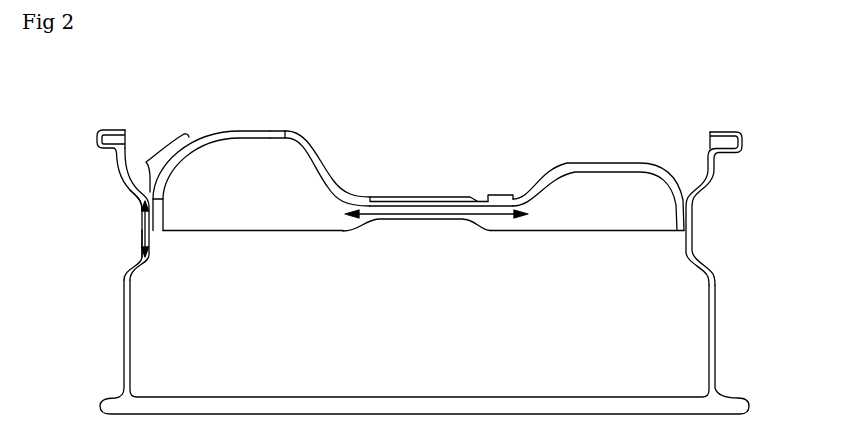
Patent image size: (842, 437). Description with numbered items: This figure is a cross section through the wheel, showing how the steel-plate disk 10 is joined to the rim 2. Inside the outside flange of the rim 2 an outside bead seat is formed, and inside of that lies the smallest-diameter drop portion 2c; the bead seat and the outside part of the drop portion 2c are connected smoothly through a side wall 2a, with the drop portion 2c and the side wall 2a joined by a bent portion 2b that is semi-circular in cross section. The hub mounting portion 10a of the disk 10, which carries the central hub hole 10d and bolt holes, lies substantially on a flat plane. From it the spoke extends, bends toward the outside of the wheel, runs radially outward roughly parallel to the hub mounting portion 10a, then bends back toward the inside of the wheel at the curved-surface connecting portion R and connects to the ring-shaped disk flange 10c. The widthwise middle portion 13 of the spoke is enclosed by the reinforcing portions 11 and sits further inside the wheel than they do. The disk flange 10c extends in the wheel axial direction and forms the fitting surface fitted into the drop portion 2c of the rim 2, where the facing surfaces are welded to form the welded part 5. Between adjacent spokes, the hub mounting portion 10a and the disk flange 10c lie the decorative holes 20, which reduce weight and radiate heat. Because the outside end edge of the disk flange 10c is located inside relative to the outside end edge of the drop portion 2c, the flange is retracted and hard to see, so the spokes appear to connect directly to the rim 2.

The rim 2 is at (78, 130).
The side wall 2a is at (132, 198).
The bent portion 2b is at (138, 205).
The drop portion 2c is at (140, 230).
The welded part 5 is at (692, 187).
The disk 10 is at (412, 170).
The hub mounting portion 10a is at (422, 220).
The disk flange 10c is at (168, 198).
The hub hole 10d is at (428, 197).
The reinforcing portions 11 is at (245, 132).
The widthwise middle portion 13 is at (603, 163).
The decorative holes 20 is at (198, 157).
The curved-surface connecting portion R is at (164, 156).